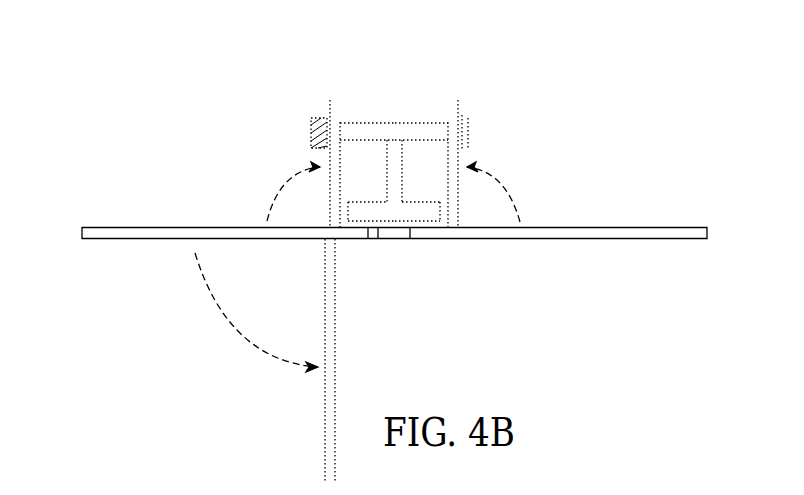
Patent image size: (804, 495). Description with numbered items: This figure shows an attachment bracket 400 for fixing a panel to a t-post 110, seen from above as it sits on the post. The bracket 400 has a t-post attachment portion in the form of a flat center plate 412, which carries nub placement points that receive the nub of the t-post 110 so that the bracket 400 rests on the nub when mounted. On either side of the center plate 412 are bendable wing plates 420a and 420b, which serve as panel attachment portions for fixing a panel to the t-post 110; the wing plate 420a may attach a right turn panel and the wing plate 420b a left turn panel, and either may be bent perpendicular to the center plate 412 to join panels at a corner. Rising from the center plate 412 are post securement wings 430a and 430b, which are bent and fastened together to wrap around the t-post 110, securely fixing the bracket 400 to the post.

The attachment bracket 400 is at (553, 213).
The bendable wing plate 420a is at (153, 227).
The bendable wing plate 420b is at (622, 227).
The flat center plate 412 is at (428, 239).
The t-post 110 is at (365, 213).
The post securement wing 430a is at (335, 120).
The post securement wing 430b is at (455, 115).